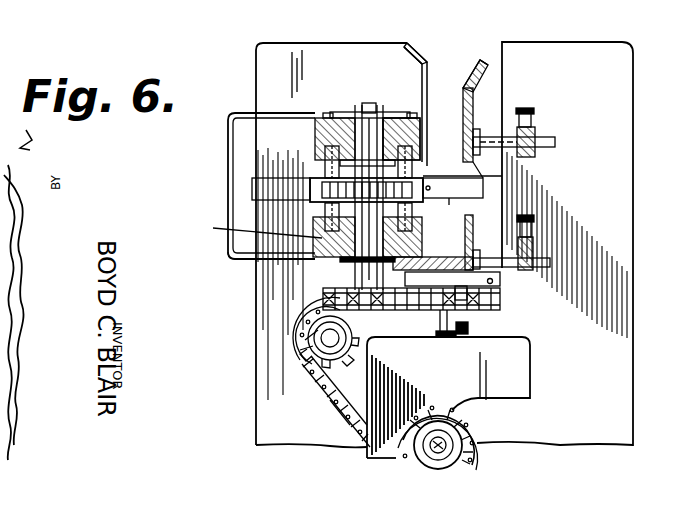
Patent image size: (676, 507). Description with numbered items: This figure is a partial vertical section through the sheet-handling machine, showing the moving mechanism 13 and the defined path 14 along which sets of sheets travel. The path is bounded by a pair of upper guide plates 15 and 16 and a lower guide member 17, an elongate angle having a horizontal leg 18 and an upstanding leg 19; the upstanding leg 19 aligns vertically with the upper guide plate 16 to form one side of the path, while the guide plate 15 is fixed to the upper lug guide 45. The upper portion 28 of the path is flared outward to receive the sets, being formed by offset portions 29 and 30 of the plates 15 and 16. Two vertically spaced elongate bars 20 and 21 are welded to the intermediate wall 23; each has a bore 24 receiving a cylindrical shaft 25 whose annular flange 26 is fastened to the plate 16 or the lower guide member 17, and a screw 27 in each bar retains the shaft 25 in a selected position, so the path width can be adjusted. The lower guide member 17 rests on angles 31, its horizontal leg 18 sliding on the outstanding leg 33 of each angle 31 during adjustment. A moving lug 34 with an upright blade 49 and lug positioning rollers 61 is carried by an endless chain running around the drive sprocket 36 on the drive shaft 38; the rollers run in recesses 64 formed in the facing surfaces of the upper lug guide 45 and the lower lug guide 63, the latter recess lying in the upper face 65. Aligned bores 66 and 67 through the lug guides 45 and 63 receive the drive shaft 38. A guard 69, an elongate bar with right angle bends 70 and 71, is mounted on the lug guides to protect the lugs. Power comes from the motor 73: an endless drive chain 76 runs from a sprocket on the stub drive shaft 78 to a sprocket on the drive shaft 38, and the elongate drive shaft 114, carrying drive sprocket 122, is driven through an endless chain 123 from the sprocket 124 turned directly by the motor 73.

The moving mechanism 13 is at (431, 181).
The defined path 14 is at (424, 102).
The upper guide plate 15 is at (420, 50).
The upper guide plate 16 is at (483, 58).
The lower guide member 17 is at (458, 256).
The horizontal leg 18 is at (415, 311).
The upstanding leg 19 is at (474, 230).
The elongate bar 20 is at (537, 130).
The elongate bar 21 is at (535, 243).
The intermediate wall 23 is at (634, 80).
The bore 24 is at (536, 270).
The cylindrical shaft 25 is at (556, 141).
The annular flange 26 is at (480, 134).
The screw 27 is at (531, 114).
The upper portion of the defined path 28 is at (458, 46).
The offset portion 29 is at (410, 52).
The offset portion 30 is at (466, 74).
The angle 31 is at (492, 288).
The outstanding leg 33 is at (467, 304).
The moving lug 34 is at (471, 179).
The drive sprocket 36 is at (268, 166).
The drive shaft 38 is at (369, 102).
The upper lug guide 45 is at (316, 126).
The upright elongate blade 49 is at (451, 194).
The lug positioning roller 61 is at (324, 165).
The lower lug guide 63 is at (320, 258).
The recess 64 is at (424, 140).
The upper face 65 is at (337, 190).
The bore 66 is at (362, 118).
The bore 67 is at (256, 229).
The guard 69 is at (236, 170).
The right angle bend 70 is at (232, 112).
The right angle bend 71 is at (230, 256).
The motor 73 is at (531, 395).
The endless drive chain 76 is at (396, 333).
The stub drive shaft 78 is at (467, 332).
The elongate drive shaft 114 is at (317, 318).
The drive sprocket 122 is at (322, 364).
The endless chain 123 is at (341, 400).
The sprocket 124 is at (467, 428).